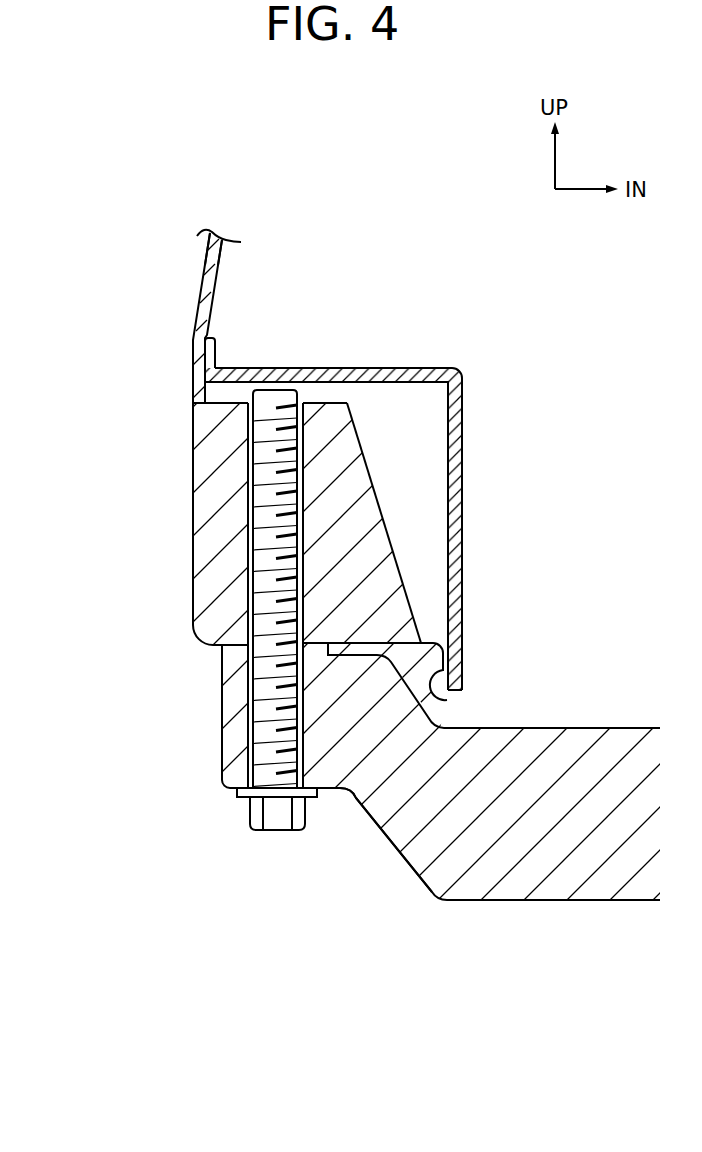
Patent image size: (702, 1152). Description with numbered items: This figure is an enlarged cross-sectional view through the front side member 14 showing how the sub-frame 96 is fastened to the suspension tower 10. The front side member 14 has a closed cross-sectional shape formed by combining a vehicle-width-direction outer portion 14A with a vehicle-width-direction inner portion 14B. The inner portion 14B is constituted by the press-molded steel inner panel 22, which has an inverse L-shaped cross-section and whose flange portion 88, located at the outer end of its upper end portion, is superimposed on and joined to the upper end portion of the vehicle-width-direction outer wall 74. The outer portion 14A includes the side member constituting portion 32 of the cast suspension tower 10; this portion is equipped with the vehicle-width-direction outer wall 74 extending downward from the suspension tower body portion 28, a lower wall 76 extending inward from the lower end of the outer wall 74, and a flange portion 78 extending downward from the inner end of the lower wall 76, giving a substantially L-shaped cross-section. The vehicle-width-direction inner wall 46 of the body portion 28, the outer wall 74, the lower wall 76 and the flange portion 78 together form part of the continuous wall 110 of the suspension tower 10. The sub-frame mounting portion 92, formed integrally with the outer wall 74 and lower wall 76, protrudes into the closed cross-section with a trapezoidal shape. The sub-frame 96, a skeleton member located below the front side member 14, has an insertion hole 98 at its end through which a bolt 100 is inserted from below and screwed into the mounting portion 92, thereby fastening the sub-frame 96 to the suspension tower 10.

The suspension tower 10 is at (552, 350).
The front side member 14 is at (492, 450).
The vehicle-width-direction outer portion 14A is at (190, 613).
The vehicle-width-direction inner portion 14B is at (472, 537).
The inner panel 22 is at (400, 368).
The suspension tower body portion 28 is at (185, 248).
The side member constituting portion 32 is at (180, 584).
The vehicle-width-direction inner wall 46 is at (198, 302).
The vehicle-width-direction outer wall 74 is at (193, 468).
The lower wall 76 is at (355, 645).
The flange portion 78 is at (447, 700).
The flange portion 88 is at (216, 350).
The sub-frame mounting portion 92 is at (370, 480).
The sub-frame 96 is at (550, 901).
The insertion hole 98 is at (248, 718).
The bolt 100 is at (278, 835).
The continuous wall 110 is at (245, 522).